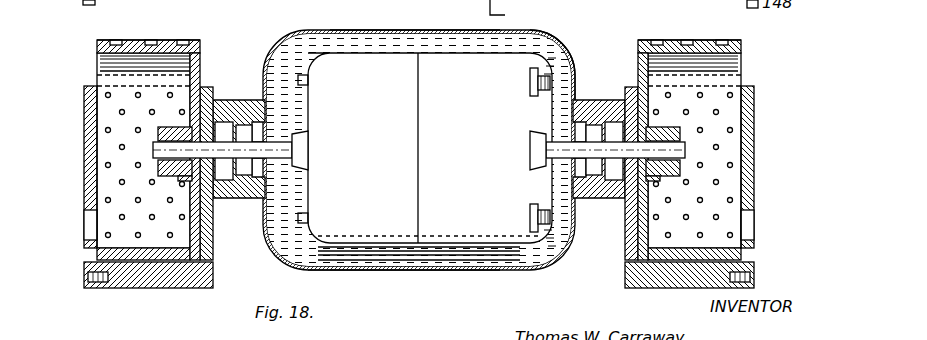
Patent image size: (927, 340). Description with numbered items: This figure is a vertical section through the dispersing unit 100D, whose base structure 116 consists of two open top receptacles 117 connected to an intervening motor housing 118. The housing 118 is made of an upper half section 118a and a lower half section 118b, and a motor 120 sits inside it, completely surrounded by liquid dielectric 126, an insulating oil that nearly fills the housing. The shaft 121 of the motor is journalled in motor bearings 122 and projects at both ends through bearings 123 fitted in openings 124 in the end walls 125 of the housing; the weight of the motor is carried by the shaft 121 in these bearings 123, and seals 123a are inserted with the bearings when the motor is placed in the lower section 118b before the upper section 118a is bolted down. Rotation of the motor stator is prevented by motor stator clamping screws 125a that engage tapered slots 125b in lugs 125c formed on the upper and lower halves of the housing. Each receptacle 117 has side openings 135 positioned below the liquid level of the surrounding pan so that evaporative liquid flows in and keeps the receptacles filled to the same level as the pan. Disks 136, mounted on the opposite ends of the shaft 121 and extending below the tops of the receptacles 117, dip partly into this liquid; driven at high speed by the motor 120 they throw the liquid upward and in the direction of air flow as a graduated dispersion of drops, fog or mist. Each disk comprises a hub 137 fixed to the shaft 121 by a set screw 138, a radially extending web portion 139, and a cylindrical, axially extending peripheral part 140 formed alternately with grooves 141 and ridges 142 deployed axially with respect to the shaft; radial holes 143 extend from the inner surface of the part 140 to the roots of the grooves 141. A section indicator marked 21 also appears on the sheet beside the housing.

The section line 21 is at (512, 14).
The dispersing unit 100D is at (425, 272).
The base structure 116 is at (328, 268).
The open top receptacles 117 is at (84, 143).
The motor housing 118 is at (419, 140).
The upper half section 118a is at (385, 30).
The lower half section 118b is at (462, 275).
The motor 120 is at (420, 148).
The shaft 121 is at (275, 145).
The motor bearings 122 is at (305, 160).
The bearings 123 is at (250, 200).
The seals 123a is at (232, 200).
The openings 124 is at (235, 115).
The end walls 125 is at (263, 96).
The motor stator clamping screws 125a is at (555, 65).
The tapered slots 125b is at (536, 215).
The lugs 125c is at (518, 275).
The liquid dielectric 126 is at (525, 52).
The side openings 135 is at (84, 220).
The disks 136 is at (142, 37).
The hub 137 is at (160, 127).
The set screw 138 is at (190, 180).
The web portion 139 is at (200, 72).
The cylindrical peripheral part 140 is at (97, 47).
The grooves 141 is at (165, 42).
The ridges 142 is at (117, 40).
The radial holes 143 is at (100, 78).